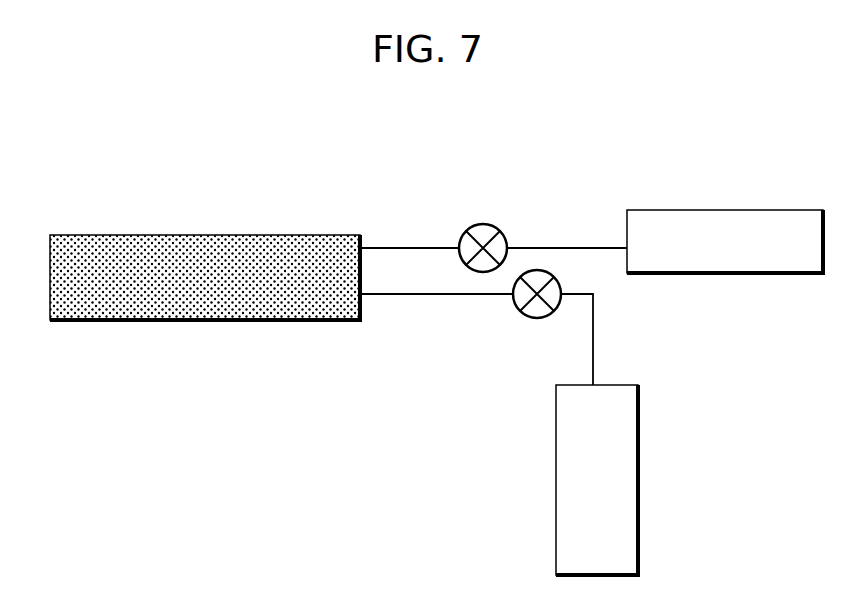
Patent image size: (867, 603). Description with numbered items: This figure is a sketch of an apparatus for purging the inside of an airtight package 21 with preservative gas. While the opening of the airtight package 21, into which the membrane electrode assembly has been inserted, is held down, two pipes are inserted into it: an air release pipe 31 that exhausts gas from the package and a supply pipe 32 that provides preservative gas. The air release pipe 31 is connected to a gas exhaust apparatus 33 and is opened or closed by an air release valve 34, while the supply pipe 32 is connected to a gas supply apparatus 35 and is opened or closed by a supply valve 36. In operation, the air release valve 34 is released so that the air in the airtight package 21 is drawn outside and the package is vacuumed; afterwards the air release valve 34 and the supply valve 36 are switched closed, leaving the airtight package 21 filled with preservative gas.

The airtight package 21 is at (205, 258).
The air release pipe 31 is at (403, 247).
The supply pipe 32 is at (418, 297).
The gas exhaust apparatus 33 is at (710, 225).
The air release valve 34 is at (479, 222).
The gas supply apparatus 35 is at (613, 498).
The supply valve 36 is at (527, 318).